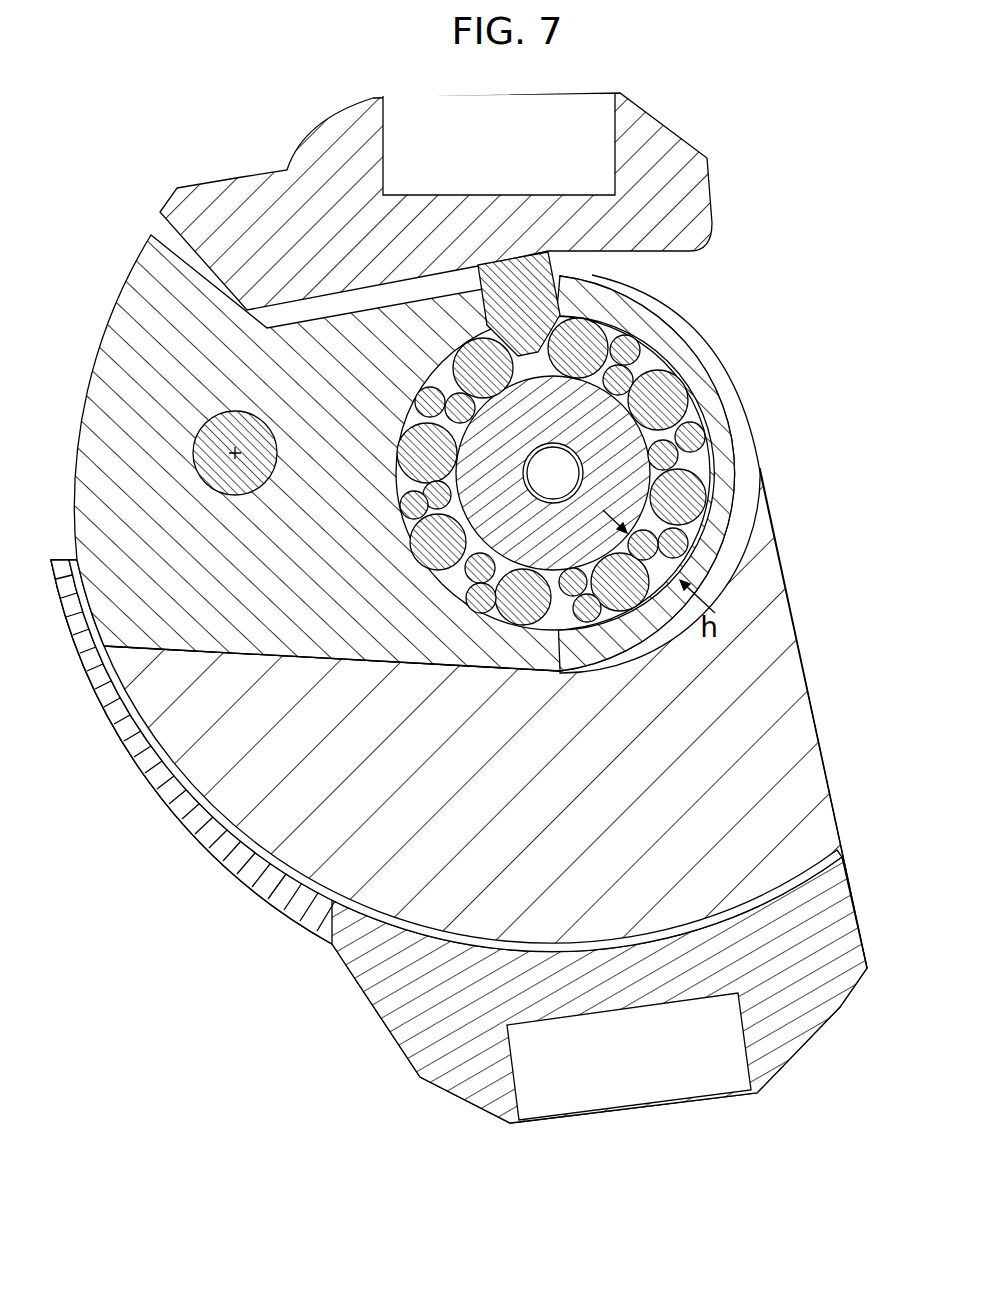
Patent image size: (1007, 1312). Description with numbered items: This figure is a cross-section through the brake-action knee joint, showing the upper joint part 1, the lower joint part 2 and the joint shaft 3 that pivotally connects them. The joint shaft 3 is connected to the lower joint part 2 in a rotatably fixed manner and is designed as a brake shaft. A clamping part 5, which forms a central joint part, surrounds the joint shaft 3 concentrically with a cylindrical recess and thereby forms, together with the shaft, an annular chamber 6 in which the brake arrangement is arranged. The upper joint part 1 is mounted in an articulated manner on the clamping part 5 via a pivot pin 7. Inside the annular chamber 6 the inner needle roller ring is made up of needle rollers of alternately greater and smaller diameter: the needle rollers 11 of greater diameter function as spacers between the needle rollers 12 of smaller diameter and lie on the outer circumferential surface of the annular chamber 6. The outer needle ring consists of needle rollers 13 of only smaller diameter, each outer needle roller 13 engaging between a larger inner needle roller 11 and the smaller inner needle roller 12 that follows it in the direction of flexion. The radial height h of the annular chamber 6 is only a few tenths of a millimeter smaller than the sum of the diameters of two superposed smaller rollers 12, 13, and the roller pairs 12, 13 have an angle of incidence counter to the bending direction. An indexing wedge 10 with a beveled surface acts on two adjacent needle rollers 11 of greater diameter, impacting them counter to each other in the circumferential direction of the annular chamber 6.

The upper joint part 1 is at (695, 205).
The lower joint part 2 is at (424, 1048).
The joint shaft 3 is at (583, 423).
The clamping part 5 is at (122, 305).
The annular chamber 6 is at (452, 592).
The pivot pin 7 is at (207, 440).
The indexing wedge 10 is at (521, 268).
The needle rollers of greater diameter 11 is at (672, 405).
The needle rollers of smaller diameter 12 is at (690, 462).
The outer needle rollers 13 is at (706, 429).